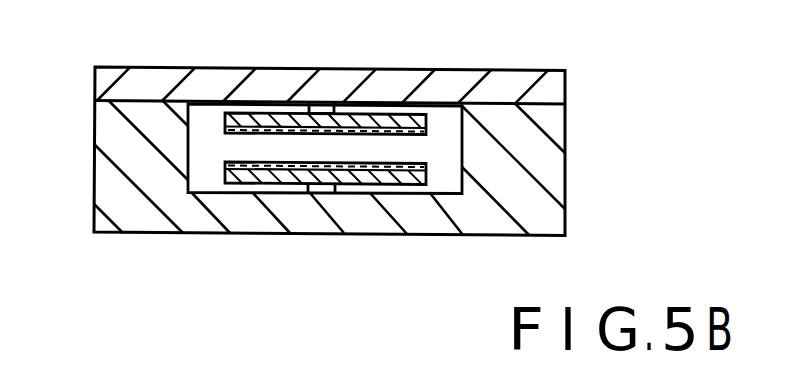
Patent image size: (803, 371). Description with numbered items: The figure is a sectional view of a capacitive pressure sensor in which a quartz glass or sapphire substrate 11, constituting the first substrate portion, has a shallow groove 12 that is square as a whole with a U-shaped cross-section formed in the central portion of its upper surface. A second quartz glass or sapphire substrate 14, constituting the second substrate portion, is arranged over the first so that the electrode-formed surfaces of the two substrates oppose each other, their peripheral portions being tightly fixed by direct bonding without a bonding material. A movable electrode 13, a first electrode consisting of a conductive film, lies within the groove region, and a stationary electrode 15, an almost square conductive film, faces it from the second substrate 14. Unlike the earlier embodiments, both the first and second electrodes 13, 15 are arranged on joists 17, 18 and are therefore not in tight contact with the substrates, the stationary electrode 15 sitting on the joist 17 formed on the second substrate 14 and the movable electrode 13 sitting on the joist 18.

The substrate 11 is at (104, 163).
The groove 12 is at (208, 176).
The movable electrode 13 is at (383, 176).
The substrate 14 is at (104, 84).
The stationary electrode 15 is at (394, 114).
The joist 17 is at (327, 108).
The joist 18 is at (325, 188).